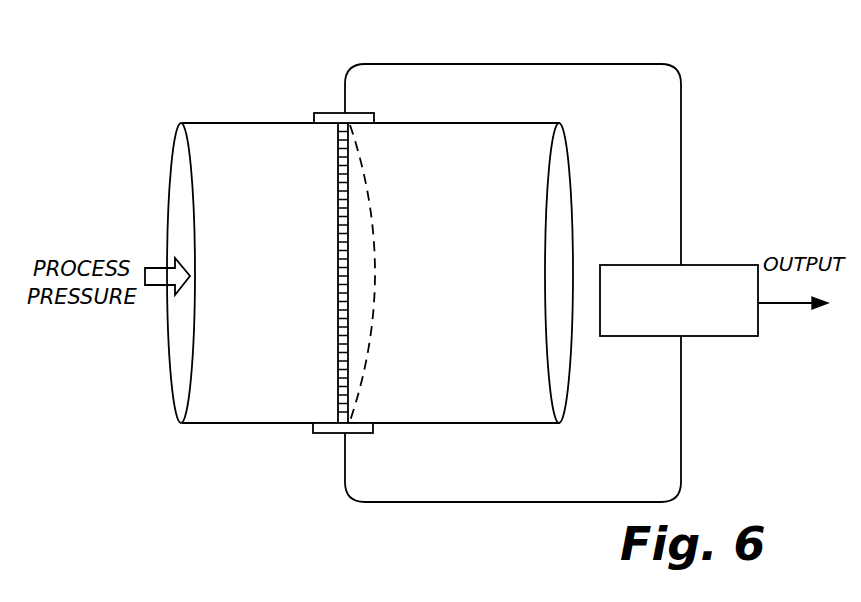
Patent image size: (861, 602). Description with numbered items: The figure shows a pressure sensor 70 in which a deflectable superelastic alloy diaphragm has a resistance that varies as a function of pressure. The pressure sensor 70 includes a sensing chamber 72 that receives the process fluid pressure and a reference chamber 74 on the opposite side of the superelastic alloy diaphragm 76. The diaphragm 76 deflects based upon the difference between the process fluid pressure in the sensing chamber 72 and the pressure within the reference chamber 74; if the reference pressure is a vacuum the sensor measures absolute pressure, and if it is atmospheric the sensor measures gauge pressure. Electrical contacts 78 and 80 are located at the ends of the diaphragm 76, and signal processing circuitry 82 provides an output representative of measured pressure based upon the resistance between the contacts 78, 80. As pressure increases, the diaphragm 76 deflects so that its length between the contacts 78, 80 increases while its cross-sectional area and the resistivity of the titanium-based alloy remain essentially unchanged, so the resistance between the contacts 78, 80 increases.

The pressure sensor 70 is at (128, 413).
The sensing chamber 72 is at (219, 124).
The reference chamber 74 is at (453, 123).
The superelastic alloy diaphragm 76 is at (338, 333).
The electrical contact 78 is at (322, 113).
The electrical contact 80 is at (366, 433).
The signal processing circuitry 82 is at (691, 265).